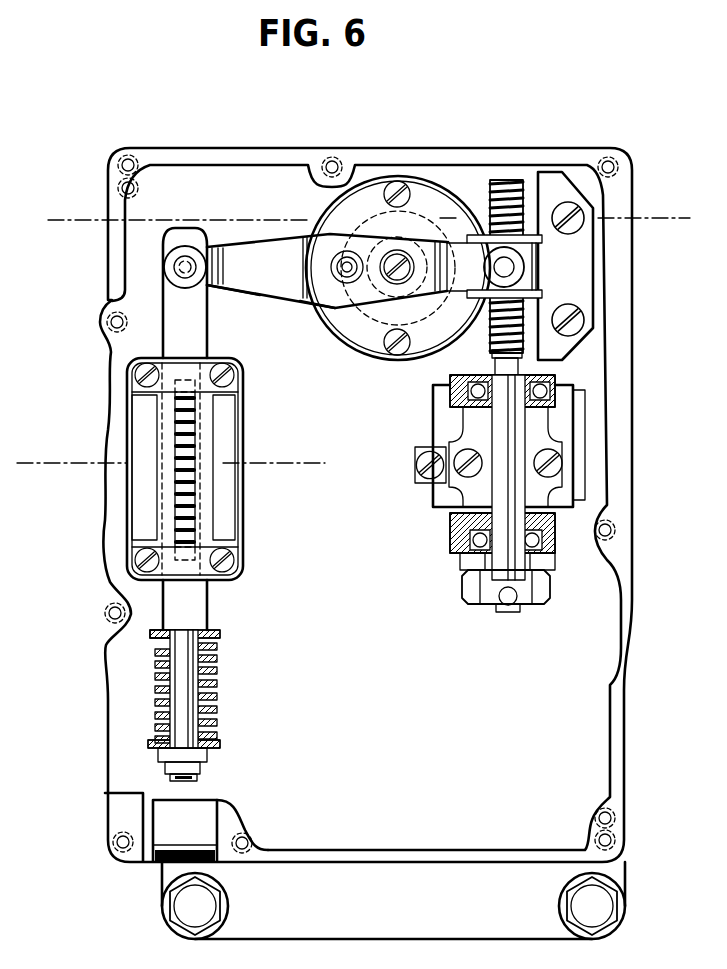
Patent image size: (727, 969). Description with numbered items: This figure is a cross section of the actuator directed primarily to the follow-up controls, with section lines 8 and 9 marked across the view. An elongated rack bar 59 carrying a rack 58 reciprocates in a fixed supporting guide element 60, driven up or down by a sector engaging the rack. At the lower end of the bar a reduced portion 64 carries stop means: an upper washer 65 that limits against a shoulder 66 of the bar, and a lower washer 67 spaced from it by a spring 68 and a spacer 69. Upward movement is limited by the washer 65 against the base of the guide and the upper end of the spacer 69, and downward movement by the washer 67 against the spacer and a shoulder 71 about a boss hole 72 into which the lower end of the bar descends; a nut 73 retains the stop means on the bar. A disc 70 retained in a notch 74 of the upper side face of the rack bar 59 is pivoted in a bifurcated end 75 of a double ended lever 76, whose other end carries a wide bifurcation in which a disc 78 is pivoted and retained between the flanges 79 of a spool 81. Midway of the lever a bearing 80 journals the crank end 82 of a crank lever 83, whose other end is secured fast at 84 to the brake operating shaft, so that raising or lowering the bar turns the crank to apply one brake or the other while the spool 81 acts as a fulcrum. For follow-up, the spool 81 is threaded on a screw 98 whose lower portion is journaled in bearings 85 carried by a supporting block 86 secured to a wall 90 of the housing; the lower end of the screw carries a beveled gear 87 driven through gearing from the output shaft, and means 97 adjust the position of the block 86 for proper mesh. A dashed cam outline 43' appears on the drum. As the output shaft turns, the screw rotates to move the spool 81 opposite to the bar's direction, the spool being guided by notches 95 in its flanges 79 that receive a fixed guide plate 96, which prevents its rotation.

The section line 8- 8 is at (657, 248).
The section line 9- 9 is at (305, 447).
The cam 43' is at (398, 225).
The rack 58 is at (196, 434).
The rack bar 59 is at (208, 608).
The guide element 60 is at (244, 531).
The reduced portion 64 is at (183, 703).
The upper washer 65 is at (155, 634).
The shoulder 66 is at (165, 630).
The lower washer 67 is at (212, 744).
The spring 68 is at (217, 713).
The spacer 69 is at (217, 663).
The disc 70 is at (163, 272).
The shoulder 71 is at (222, 801).
The boss hole 72 is at (165, 813).
The nut 73 is at (165, 764).
The notch 74 is at (210, 246).
The bifurcated end 75 is at (212, 286).
The double ended lever 76 is at (270, 281).
The disc 78 is at (525, 268).
The flanges 79 is at (445, 300).
The bearing 80 is at (318, 303).
The spool 81 is at (481, 233).
The crank end 82 is at (342, 262).
The crank lever 83 is at (370, 296).
The securing point 84 is at (390, 254).
The bearings 85 is at (472, 541).
The supporting block 86 is at (570, 418).
The beveled gear 87 is at (547, 598).
The wall 90 is at (371, 717).
The notches 95 is at (545, 287).
The guide plate 96 is at (544, 356).
The adjusting means 97 is at (415, 454).
The screw 98 is at (512, 180).